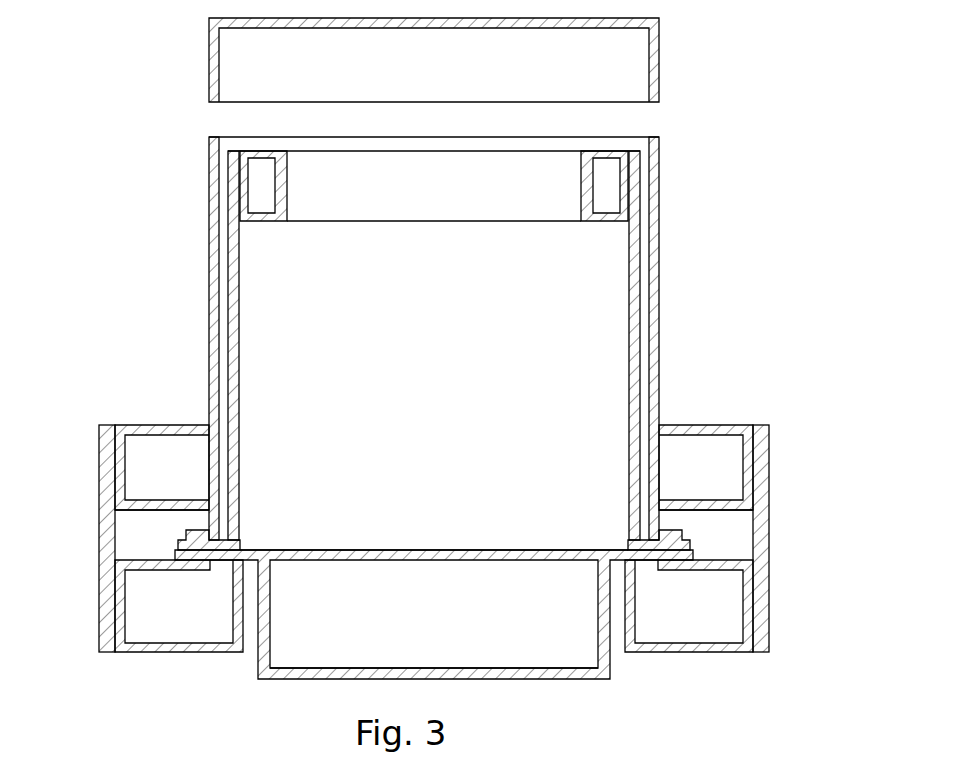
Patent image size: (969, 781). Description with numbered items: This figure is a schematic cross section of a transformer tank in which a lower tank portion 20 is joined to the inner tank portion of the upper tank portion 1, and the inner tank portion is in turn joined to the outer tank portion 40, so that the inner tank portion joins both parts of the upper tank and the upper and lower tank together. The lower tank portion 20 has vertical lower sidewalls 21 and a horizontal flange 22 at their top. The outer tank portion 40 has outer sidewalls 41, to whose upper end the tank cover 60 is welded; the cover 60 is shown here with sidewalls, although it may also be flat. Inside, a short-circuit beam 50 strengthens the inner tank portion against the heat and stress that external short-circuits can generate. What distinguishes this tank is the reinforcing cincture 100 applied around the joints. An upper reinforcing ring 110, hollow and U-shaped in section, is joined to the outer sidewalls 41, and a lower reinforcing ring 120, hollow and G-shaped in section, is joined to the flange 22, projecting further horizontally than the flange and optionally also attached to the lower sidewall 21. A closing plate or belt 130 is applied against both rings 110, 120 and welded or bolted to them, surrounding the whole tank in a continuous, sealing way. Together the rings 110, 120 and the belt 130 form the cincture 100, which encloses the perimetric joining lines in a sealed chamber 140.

The upper tank portion 1 is at (780, 276).
The lower tank portion 20 is at (282, 690).
The lower sidewall 21 is at (610, 665).
The flange 22 is at (175, 553).
The outer tank portion 40 is at (194, 266).
The outer sidewall 41 is at (208, 245).
The short-circuit beam 50 is at (636, 176).
The tank cover 60 is at (663, 33).
The reinforcing cincture 100 is at (100, 406).
The upper reinforcing ring 110 is at (150, 423).
The lower reinforcing ring 120 is at (133, 652).
The closing plate or belt 130 is at (95, 572).
The sealed chamber 140 is at (145, 540).